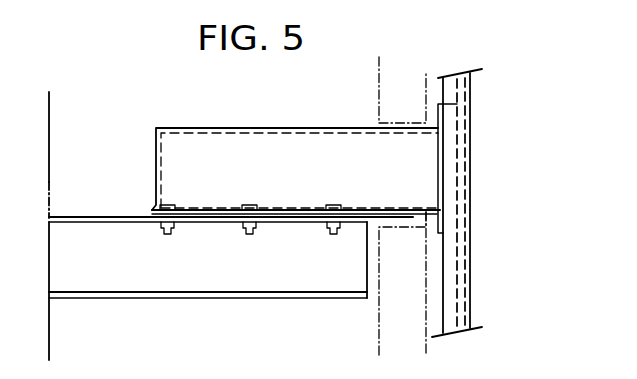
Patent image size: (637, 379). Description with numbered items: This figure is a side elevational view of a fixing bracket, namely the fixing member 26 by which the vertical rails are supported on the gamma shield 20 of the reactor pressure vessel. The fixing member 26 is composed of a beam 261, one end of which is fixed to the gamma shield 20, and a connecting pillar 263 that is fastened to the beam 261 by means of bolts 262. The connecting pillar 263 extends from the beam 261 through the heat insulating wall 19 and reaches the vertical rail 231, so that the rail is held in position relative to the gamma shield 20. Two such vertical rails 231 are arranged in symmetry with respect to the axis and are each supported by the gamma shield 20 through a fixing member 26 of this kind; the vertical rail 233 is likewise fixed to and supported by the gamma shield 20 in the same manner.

The heat insulating wall 19 is at (375, 318).
The gamma shield 20 is at (49, 117).
The fixing member 26 is at (116, 217).
The vertical rail 231 is at (472, 190).
The vertical rail 233 is at (461, 204).
The beam 261 is at (231, 298).
The bolts 262 is at (246, 209).
The connecting pillar 263 is at (278, 128).